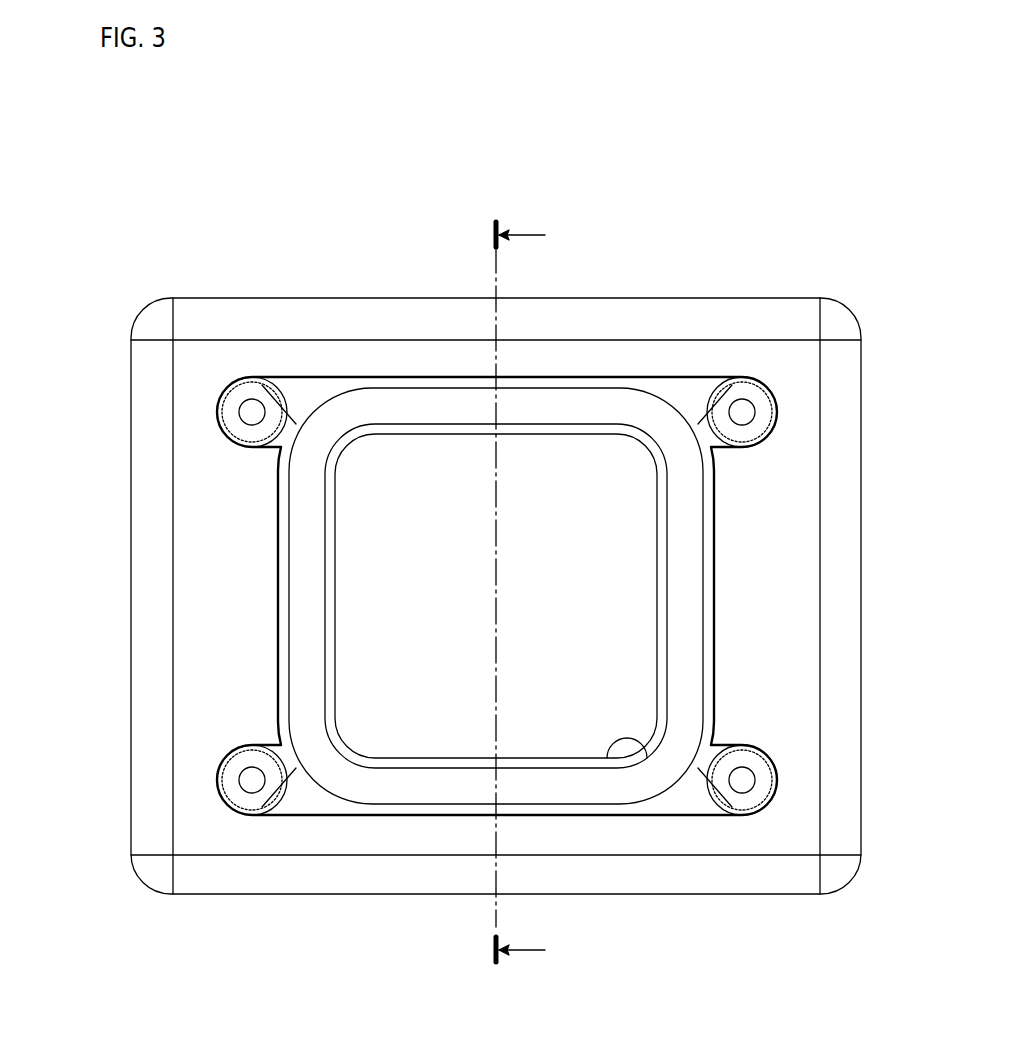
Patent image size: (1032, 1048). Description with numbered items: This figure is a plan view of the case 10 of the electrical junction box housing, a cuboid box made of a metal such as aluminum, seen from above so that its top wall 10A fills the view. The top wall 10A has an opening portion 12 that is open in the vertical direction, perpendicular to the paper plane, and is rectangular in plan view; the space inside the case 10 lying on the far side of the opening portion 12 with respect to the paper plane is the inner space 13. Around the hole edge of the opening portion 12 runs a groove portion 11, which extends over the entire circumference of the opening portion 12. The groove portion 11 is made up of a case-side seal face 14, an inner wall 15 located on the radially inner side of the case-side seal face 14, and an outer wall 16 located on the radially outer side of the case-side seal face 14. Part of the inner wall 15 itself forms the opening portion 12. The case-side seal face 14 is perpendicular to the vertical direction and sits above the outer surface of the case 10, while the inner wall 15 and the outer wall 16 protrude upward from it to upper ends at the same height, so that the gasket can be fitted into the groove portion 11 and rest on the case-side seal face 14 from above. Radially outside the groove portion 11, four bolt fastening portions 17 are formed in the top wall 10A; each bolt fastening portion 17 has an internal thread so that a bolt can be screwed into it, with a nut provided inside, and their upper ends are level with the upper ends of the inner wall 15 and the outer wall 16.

The case 10 is at (434, 245).
The top wall 10A is at (762, 575).
The groove portion 11 is at (397, 596).
The opening portion 12 is at (607, 752).
The inner space 13 is at (412, 716).
The case-side seal face 14 is at (309, 586).
The inner wall 15 is at (328, 548).
The outer wall 16 is at (284, 617).
The bolt fastening portion 17 is at (252, 781).